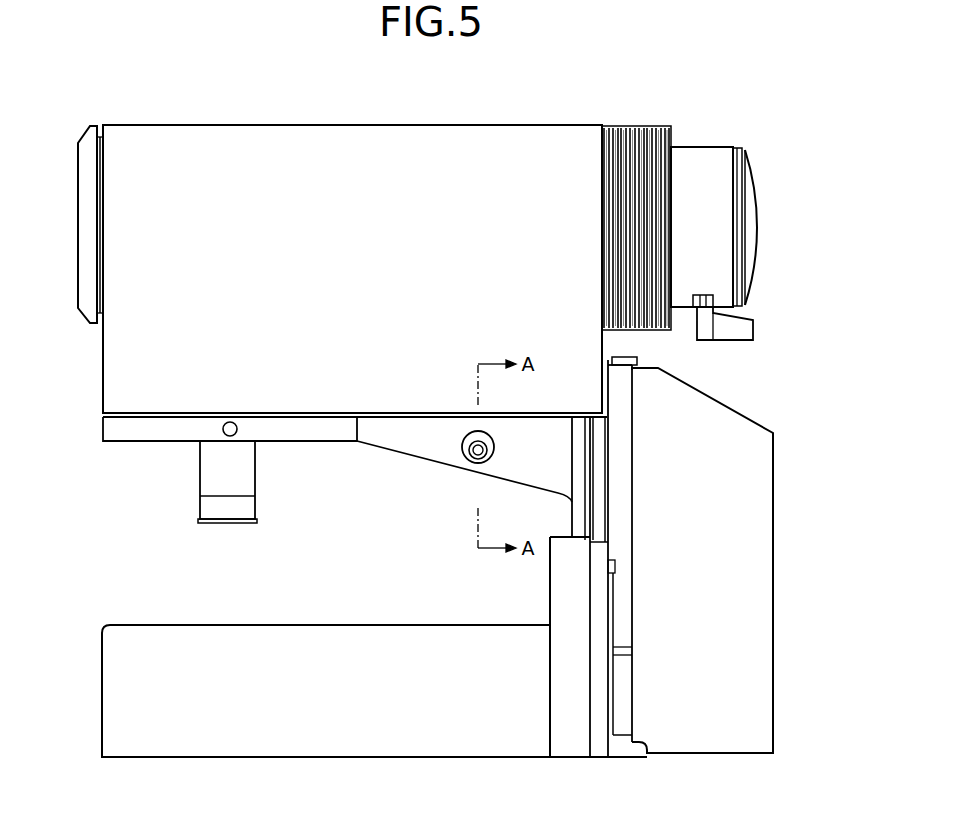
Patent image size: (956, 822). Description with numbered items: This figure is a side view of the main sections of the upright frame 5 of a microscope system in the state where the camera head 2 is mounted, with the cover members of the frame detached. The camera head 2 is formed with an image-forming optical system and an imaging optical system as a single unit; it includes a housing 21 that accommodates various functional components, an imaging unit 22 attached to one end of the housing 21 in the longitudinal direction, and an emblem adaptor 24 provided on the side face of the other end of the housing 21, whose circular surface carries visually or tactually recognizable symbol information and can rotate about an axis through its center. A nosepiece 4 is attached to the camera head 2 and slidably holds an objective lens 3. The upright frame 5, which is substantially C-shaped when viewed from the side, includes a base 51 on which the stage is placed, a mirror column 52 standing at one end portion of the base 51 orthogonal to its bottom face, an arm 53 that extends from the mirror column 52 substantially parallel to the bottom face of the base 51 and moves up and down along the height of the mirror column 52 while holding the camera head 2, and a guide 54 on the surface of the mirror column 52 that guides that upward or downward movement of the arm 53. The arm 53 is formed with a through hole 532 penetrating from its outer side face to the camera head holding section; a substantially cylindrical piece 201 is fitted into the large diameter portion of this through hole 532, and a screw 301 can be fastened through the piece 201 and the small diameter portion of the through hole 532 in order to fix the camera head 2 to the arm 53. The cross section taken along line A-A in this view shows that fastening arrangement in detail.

The camera head 2 is at (396, 126).
The housing 21 is at (232, 124).
The imaging unit 22 is at (703, 147).
The emblem adaptor 24 is at (78, 189).
The objective lens 3 is at (200, 462).
The nosepiece 4 is at (103, 427).
The upright frame 5 is at (464, 580).
The base 51 is at (365, 733).
The mirror column 52 is at (773, 515).
The arm 53 is at (408, 456).
The guide 54 is at (625, 447).
The piece 201 is at (489, 457).
The screw 301 is at (479, 460).
The through hole 532 is at (468, 457).